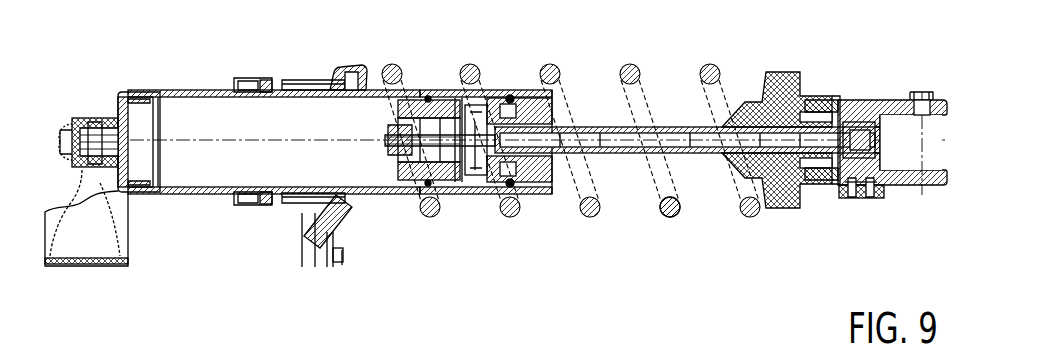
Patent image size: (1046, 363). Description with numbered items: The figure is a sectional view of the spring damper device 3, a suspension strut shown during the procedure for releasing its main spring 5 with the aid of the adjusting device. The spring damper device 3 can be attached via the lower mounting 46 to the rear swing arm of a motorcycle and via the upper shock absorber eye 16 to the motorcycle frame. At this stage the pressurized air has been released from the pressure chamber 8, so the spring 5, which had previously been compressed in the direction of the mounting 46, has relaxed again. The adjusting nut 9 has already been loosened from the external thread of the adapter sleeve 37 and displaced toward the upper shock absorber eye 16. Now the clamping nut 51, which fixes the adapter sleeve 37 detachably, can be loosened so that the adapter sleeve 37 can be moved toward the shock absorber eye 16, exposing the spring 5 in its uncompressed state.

The spring damper device 3 is at (551, 266).
The main spring 5 is at (669, 220).
The pressure chamber 8 is at (345, 223).
The adjusting nut 9 is at (246, 78).
The upper shock absorber eye 16 is at (72, 118).
The adapter sleeve 37 is at (292, 69).
The mounting 46 is at (907, 188).
The clamping nut 51 is at (332, 69).